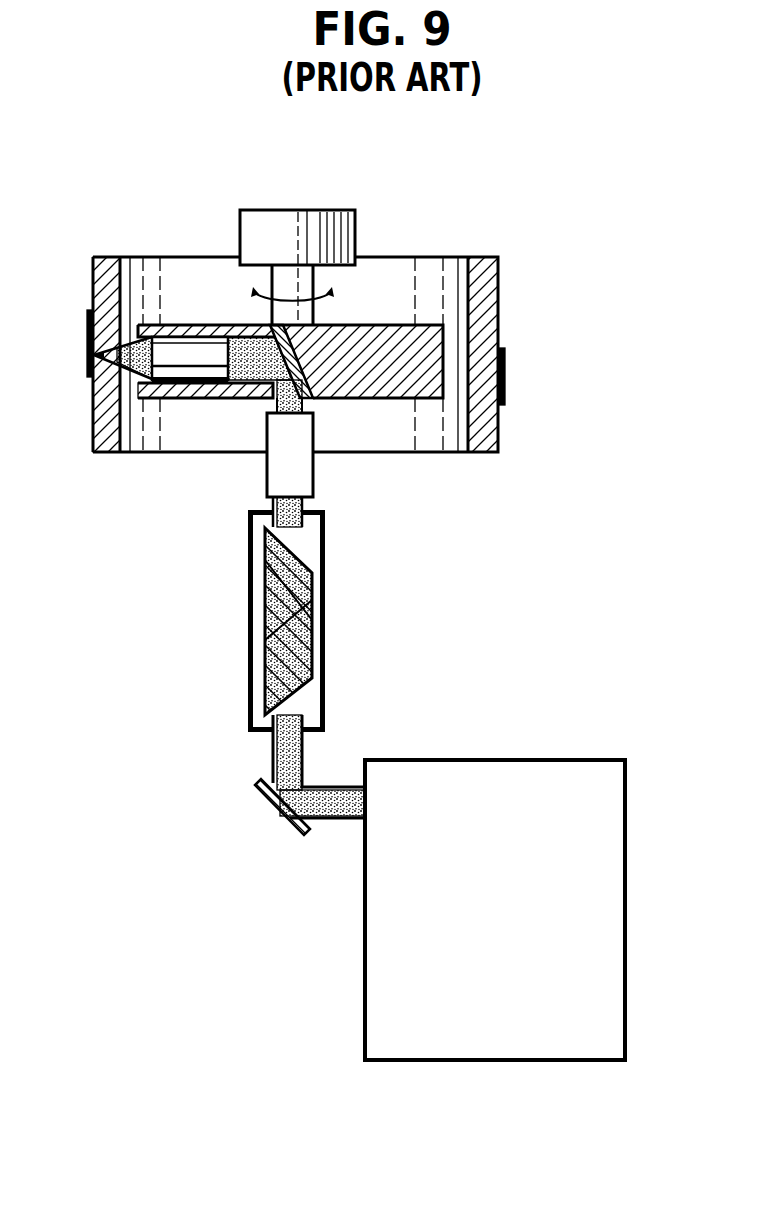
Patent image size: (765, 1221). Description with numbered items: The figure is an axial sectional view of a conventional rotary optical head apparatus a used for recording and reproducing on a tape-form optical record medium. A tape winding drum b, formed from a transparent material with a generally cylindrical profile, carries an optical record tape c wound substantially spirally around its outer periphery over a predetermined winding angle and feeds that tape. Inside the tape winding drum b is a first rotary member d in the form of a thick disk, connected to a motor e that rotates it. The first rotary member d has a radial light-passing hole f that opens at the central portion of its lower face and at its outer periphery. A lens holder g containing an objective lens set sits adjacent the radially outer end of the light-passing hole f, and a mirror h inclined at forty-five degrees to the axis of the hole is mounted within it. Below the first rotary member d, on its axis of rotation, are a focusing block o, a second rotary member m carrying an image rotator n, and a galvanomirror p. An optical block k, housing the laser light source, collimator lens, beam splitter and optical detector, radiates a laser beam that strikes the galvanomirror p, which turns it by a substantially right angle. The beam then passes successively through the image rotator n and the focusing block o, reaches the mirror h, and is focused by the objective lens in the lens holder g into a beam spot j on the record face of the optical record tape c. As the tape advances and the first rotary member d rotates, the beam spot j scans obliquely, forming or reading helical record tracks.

The rotary optical head apparatus a is at (550, 238).
The tape winding drum b is at (93, 287).
The optical record tape c is at (90, 346).
The first rotary member d is at (393, 385).
The motor e is at (297, 226).
The light-passing hole f is at (247, 372).
The lens holder g is at (192, 337).
The mirror h is at (301, 399).
The beam spot j is at (97, 378).
The optical block k is at (520, 767).
The second rotary member m is at (318, 528).
The image rotator n is at (313, 592).
The focusing block o is at (303, 473).
The galvanomirror p is at (285, 818).